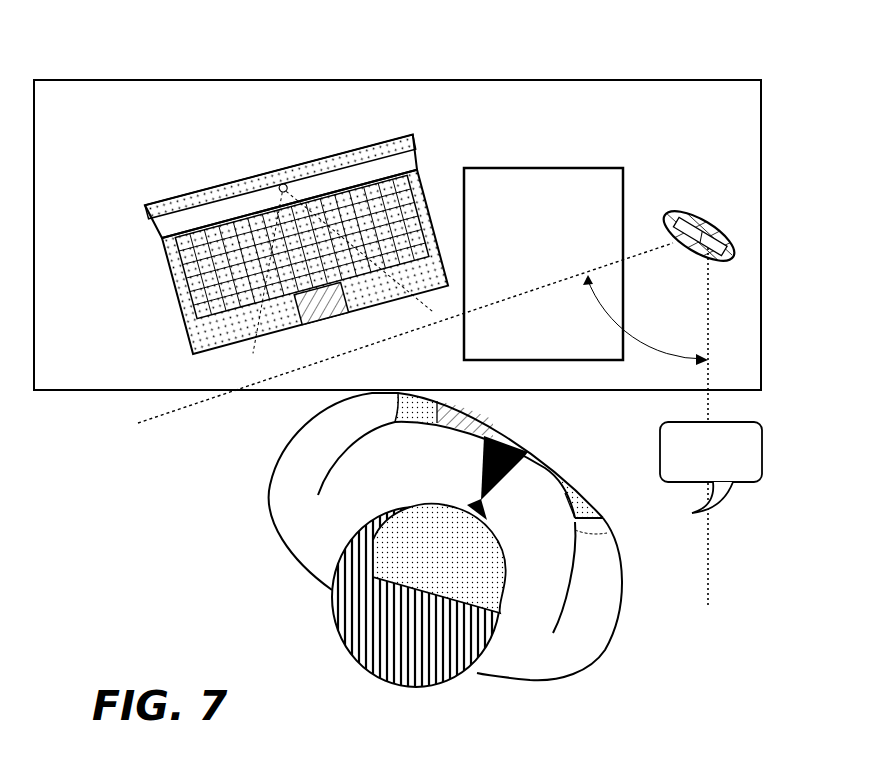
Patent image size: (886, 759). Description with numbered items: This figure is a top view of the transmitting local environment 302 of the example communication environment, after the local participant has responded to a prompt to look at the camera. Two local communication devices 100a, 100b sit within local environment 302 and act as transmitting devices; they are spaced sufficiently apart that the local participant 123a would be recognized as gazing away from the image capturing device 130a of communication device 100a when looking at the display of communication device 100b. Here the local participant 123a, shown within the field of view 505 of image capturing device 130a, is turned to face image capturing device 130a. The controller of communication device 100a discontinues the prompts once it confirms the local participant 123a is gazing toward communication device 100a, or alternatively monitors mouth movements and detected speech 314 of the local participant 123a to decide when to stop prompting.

The local environment 302 is at (184, 108).
The communication device 100b is at (387, 140).
The image capturing device 130a is at (698, 210).
The communication device 100a is at (735, 240).
The field of view 505 is at (423, 424).
The speech 314 is at (711, 467).
The local participant 123a is at (620, 617).